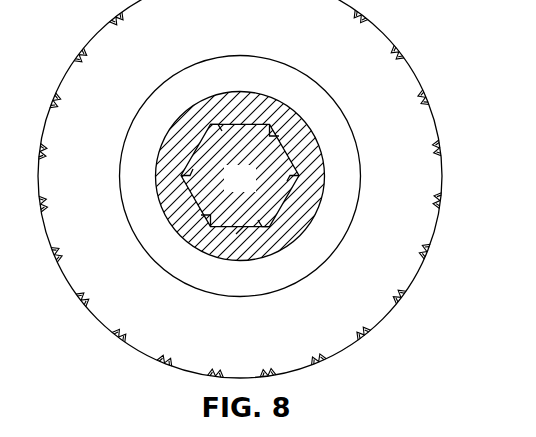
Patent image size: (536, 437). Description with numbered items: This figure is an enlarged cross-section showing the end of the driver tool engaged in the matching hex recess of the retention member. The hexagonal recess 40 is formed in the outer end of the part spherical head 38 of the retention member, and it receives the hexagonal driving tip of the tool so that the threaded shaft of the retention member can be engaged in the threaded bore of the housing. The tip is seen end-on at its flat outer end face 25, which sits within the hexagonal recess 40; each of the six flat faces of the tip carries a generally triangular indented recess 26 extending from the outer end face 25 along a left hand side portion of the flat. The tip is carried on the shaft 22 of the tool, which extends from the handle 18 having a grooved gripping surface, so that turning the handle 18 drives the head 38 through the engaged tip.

The handle 18 is at (383, 318).
The shaft 22 is at (352, 123).
The part spherical head 38 is at (315, 197).
The flat outer end face 25 is at (227, 189).
The indented recess 26 is at (209, 213).
The hexagonal recess 40 is at (241, 233).